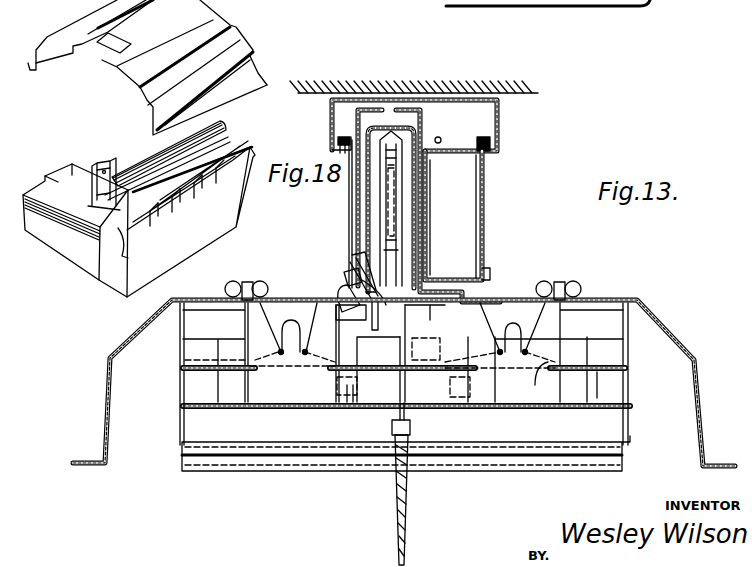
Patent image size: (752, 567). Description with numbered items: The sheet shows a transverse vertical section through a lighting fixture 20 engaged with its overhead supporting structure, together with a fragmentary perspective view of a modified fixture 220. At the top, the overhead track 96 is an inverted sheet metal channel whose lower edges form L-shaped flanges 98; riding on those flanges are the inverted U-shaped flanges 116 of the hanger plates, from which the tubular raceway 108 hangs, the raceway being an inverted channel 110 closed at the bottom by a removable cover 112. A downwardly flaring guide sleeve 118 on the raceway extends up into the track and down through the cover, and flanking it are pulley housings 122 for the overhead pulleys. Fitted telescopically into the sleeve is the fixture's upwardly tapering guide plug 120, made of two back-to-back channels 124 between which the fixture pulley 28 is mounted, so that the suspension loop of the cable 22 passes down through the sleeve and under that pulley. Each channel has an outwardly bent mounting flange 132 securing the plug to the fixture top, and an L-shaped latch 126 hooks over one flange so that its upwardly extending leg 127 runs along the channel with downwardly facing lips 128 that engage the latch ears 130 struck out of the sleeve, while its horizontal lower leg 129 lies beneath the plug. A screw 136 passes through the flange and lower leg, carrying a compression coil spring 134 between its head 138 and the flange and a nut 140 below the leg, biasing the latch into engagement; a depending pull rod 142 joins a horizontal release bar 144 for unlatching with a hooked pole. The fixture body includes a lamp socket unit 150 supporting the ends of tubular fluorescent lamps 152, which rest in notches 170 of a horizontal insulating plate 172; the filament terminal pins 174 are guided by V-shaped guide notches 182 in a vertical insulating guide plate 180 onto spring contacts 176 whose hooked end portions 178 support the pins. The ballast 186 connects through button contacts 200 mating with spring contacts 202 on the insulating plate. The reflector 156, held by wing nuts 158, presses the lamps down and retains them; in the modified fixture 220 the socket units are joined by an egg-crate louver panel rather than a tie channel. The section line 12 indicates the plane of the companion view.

In FIG. 13, the section line 12- 12 is at (386, 60).
In FIG. 13, the fixture 20 is at (690, 333).
In FIG. 13, the cable 22 is at (441, 140).
In FIG. 13, the pulley 28 is at (392, 170).
In FIG. 13, the overhead track 96 is at (500, 122).
In FIG. 13, the L-shaped flange 98 is at (494, 150).
In FIG. 13, the tubular raceway 108 is at (495, 191).
In FIG. 13, the inverted channel 110 is at (486, 232).
In FIG. 13, the removable cover 112 is at (488, 270).
In FIG. 13, the inverted U-shaped flange 116 is at (484, 137).
In FIG. 18, the guide sleeve 118 is at (94, 168).
In FIG. 13, the guide sleeve 118 is at (423, 118).
In FIG. 13, the guide plug 120 is at (368, 186).
In FIG. 18, the pulley housing 122 is at (190, 250).
In FIG. 13, the channel 124 is at (406, 145).
In FIG. 13, the latch 126 is at (344, 294).
In FIG. 13, the upwardly extending leg 127 is at (350, 247).
In FIG. 13, the lip 128 is at (345, 272).
In FIG. 13, the horizontal lower leg 129 is at (422, 353).
In FIG. 13, the pivot link 130 is at (346, 278).
In FIG. 13, the mounting flange 132 is at (430, 320).
In FIG. 13, the compression coil spring 134 is at (386, 264).
In FIG. 13, the screw 136 is at (402, 282).
In FIG. 13, the head 138 is at (400, 252).
In FIG. 13, the nut 140 is at (378, 320).
In FIG. 13, the pull rod 142 is at (411, 424).
In FIG. 13, the release bar 144 is at (407, 507).
In FIG. 18, the lamp socket unit 150 is at (128, 258).
In FIG. 18, the tubular fluorescent lamp 152 is at (222, 128).
In FIG. 18, the reflector 156 is at (123, 82).
In FIG. 13, the wing nut 158 is at (264, 282).
In FIG. 13, the notch 170 is at (540, 380).
In FIG. 13, the horizontal insulating plate 172 is at (598, 398).
In FIG. 13, the filament terminal pin 174 is at (512, 329).
In FIG. 13, the spring contact 176 is at (508, 356).
In FIG. 13, the hooked end portion 178 is at (282, 356).
In FIG. 13, the insulating guide plate 180 is at (552, 323).
In FIG. 13, the V-shaped guide notch 182 is at (288, 329).
In FIG. 18, the ballast 186 is at (56, 242).
In FIG. 13, the button contact 200 is at (358, 380).
In FIG. 13, the spring contact 202 is at (348, 403).
In FIG. 18, the modified fixture 220 is at (67, 278).